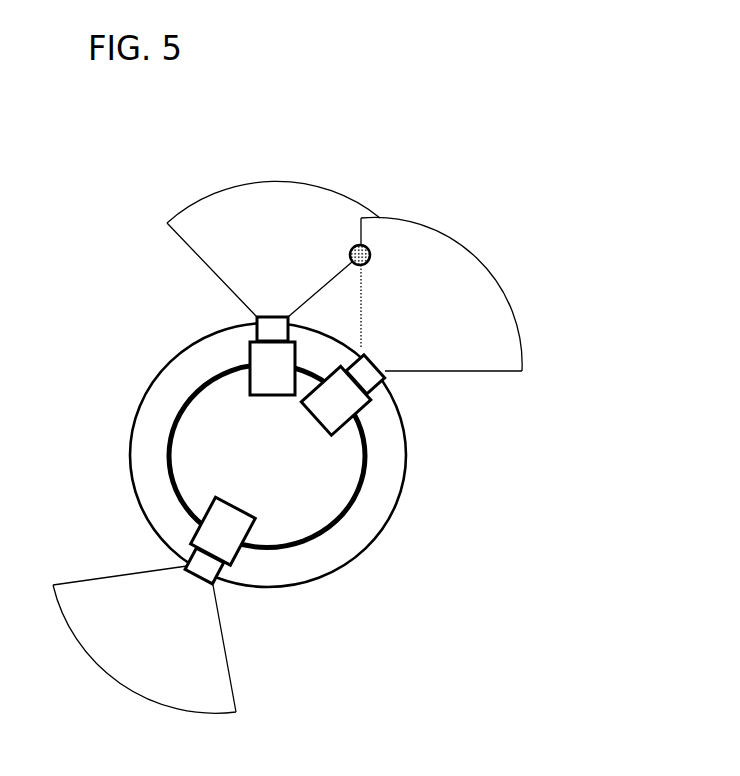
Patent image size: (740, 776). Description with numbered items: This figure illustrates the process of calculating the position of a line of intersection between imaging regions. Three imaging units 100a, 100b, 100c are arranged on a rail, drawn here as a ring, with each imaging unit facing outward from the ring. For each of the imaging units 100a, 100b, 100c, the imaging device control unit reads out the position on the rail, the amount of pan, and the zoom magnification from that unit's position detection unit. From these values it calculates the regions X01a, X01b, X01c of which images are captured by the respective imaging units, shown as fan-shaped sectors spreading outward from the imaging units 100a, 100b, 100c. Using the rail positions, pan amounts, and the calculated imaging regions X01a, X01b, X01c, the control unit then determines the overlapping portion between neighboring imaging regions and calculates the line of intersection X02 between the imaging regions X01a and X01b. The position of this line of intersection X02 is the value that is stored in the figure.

The imaging unit 100a is at (250, 348).
The imaging unit 100b is at (368, 399).
The imaging unit 100c is at (240, 560).
The imaging region X01a is at (280, 183).
The imaging region X01b is at (512, 308).
The imaging region X01c is at (237, 693).
The line of intersection X02 is at (370, 256).